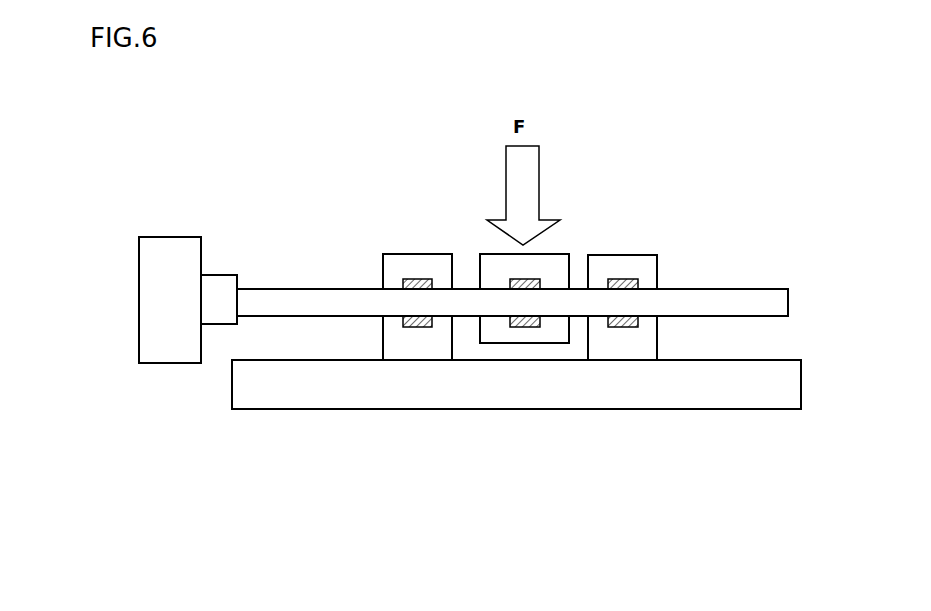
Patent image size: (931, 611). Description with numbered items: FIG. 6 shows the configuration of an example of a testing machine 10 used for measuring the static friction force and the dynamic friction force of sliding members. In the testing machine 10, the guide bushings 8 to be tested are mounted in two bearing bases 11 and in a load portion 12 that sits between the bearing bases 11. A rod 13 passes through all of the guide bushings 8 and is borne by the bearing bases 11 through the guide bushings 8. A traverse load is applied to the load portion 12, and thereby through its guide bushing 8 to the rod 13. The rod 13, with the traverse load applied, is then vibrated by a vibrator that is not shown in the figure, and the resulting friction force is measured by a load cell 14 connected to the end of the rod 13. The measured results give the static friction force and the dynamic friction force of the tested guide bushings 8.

The guide bushing 8 is at (427, 327).
The testing machine 10 is at (342, 425).
The bearing base 11 is at (415, 262).
The load portion 12 is at (490, 257).
The rod 13 is at (700, 298).
The load cell 14 is at (178, 253).